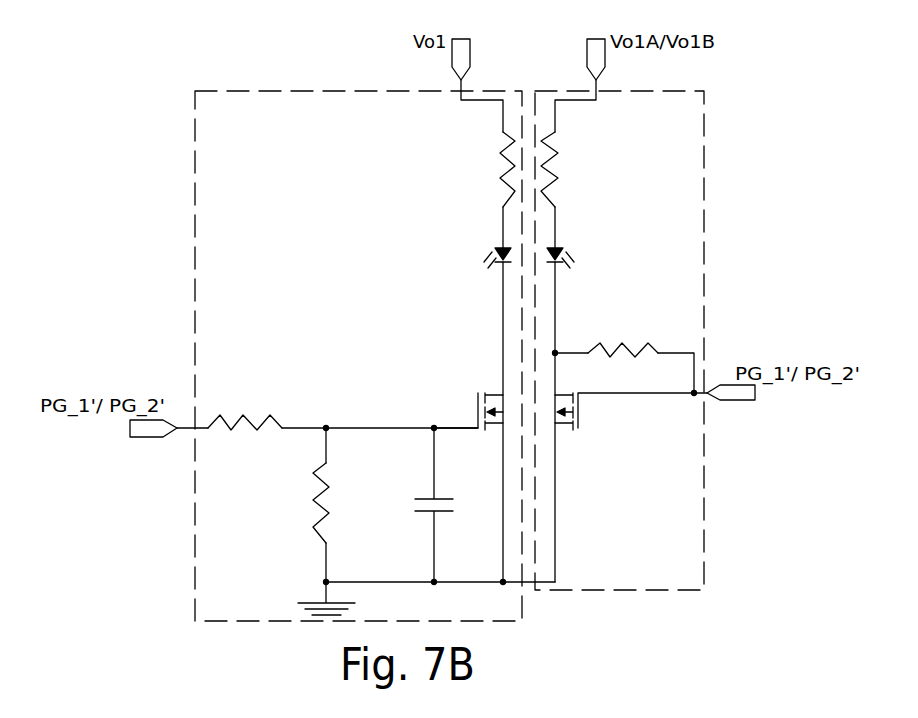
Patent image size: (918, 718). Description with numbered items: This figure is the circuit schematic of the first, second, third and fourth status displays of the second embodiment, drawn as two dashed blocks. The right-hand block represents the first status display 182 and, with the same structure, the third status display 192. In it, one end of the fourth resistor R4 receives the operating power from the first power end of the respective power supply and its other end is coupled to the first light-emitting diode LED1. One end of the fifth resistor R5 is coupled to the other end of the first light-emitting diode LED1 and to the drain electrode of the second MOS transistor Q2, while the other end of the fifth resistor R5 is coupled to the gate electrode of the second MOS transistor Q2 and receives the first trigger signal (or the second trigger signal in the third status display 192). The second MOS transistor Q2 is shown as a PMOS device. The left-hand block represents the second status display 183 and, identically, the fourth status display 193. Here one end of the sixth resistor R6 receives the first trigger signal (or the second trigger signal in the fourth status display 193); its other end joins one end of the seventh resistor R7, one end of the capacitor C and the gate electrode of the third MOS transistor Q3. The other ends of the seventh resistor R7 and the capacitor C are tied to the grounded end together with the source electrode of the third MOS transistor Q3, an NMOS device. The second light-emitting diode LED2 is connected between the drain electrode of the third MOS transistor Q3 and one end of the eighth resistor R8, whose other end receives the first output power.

The second status display 183 is at (272, 349).
The fourth status display 193 is at (195, 158).
The first status display 182 is at (708, 340).
The third status display 192 is at (704, 160).
The eighth resistor R8 is at (490, 169).
The fourth resistor R4 is at (562, 169).
The fifth resistor R5 is at (624, 355).
The sixth resistor R6 is at (245, 437).
The seventh resistor R7 is at (309, 505).
The capacitor C is at (425, 505).
The second MOS transistor Q2 is at (631, 416).
The third MOS transistor Q3 is at (468, 411).
The first light-emitting diode LED1 is at (583, 248).
The second light-emitting diode LED2 is at (475, 248).